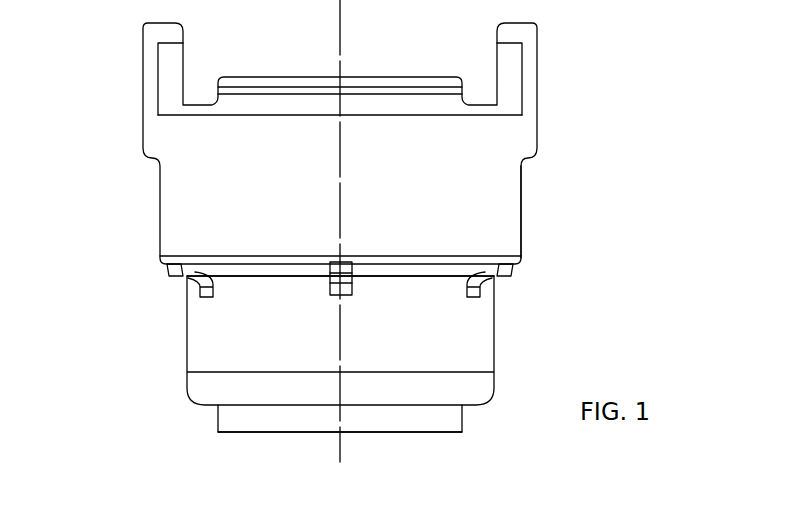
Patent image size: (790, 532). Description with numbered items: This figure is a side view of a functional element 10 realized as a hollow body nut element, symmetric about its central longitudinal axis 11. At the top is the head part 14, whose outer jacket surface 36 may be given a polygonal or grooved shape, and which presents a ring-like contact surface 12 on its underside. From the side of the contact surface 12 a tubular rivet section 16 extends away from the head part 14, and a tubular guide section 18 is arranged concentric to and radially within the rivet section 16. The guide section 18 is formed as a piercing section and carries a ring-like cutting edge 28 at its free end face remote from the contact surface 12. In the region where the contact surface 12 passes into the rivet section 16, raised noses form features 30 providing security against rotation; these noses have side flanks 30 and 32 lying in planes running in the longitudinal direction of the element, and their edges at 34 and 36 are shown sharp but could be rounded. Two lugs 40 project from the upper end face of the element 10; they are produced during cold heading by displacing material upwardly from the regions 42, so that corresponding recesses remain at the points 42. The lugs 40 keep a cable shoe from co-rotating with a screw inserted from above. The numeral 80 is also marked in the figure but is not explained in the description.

The closure assembly 10 is at (539, 215).
The central axis 11 is at (340, 20).
The lower body flange 12 is at (415, 272).
The upper housing 14 is at (158, 192).
The lower body 16 is at (185, 340).
The base 18 is at (217, 430).
The base bottom 28 is at (463, 433).
The hook 30 is at (215, 290).
The tab 32 is at (183, 280).
The clip 34 is at (352, 280).
The wall surface 36 is at (148, 228).
The ear 40 is at (143, 48).
The side wall 42 is at (523, 182).
The clip base 80 is at (330, 297).